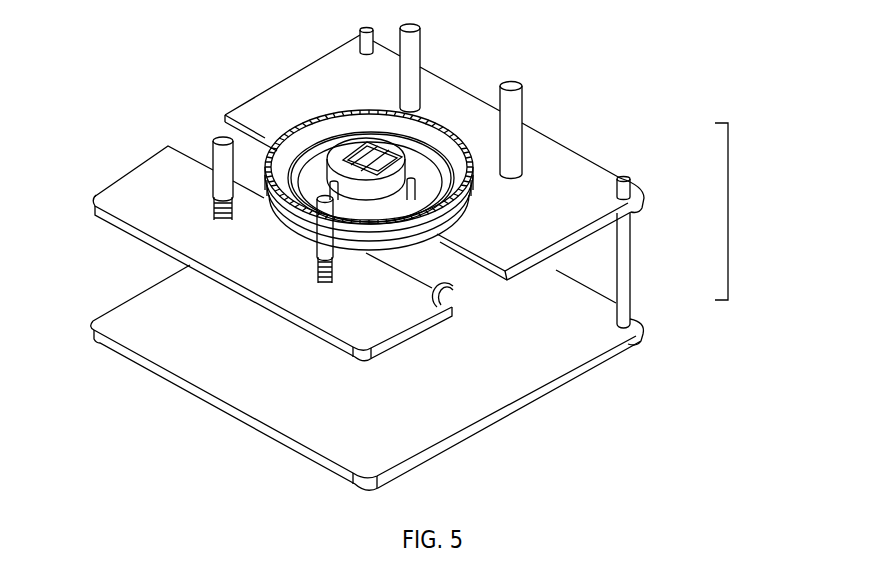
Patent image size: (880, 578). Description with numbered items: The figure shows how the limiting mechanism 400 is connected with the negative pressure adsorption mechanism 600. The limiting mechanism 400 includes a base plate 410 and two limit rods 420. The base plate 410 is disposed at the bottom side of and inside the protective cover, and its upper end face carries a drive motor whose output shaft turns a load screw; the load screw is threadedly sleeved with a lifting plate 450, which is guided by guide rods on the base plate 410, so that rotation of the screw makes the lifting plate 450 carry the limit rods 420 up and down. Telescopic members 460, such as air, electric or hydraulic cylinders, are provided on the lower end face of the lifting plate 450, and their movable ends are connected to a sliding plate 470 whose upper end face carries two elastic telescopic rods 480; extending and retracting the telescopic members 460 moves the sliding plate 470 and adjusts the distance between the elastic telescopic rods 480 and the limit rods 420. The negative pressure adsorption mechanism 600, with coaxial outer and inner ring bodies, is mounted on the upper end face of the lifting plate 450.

The limiting mechanism 400 is at (751, 211).
The base plate 410 is at (567, 322).
The limit rods 420 is at (508, 148).
The lifting plate 450 is at (567, 211).
The telescopic members 460 is at (473, 273).
The sliding plate 470 is at (167, 213).
The elastic telescopic rods 480 is at (213, 166).
The negative pressure adsorption mechanism 600 is at (322, 115).